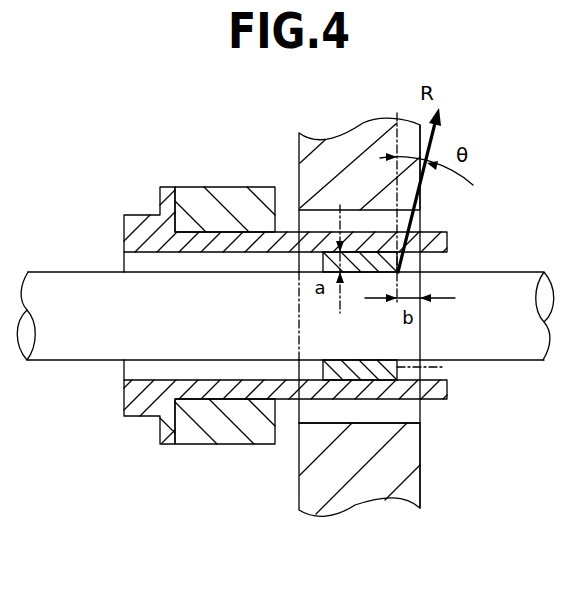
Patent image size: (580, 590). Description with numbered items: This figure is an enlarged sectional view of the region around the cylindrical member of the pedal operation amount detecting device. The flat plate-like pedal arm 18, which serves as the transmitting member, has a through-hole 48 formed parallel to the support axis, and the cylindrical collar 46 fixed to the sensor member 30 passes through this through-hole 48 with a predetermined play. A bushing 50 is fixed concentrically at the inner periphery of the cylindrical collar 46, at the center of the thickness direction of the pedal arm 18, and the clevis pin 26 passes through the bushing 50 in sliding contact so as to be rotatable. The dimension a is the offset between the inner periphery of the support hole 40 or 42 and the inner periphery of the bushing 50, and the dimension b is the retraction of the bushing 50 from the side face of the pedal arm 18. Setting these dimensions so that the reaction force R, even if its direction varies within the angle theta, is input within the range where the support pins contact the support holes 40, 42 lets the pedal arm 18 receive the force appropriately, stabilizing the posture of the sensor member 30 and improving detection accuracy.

The pedal arm 18 is at (331, 158).
The clevis pin 26 is at (74, 290).
The sensor member 30 is at (220, 213).
The support hole 40 is at (338, 315).
The support hole 42 is at (402, 384).
The cylindrical collar 46 is at (218, 392).
The through-hole 48 is at (405, 422).
The bushing 50 is at (362, 368).